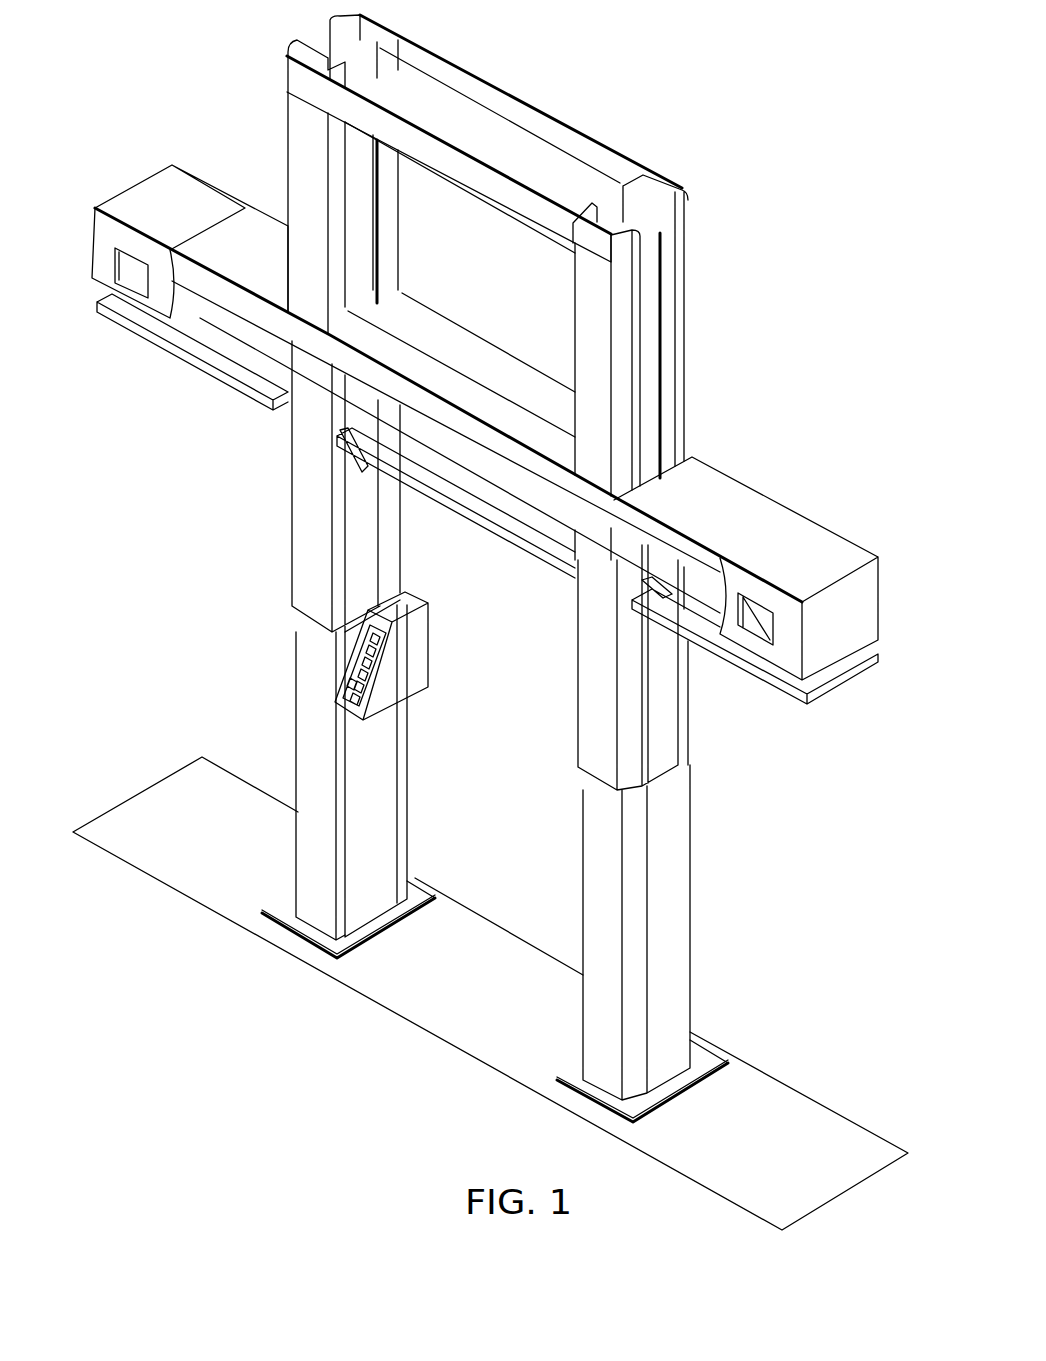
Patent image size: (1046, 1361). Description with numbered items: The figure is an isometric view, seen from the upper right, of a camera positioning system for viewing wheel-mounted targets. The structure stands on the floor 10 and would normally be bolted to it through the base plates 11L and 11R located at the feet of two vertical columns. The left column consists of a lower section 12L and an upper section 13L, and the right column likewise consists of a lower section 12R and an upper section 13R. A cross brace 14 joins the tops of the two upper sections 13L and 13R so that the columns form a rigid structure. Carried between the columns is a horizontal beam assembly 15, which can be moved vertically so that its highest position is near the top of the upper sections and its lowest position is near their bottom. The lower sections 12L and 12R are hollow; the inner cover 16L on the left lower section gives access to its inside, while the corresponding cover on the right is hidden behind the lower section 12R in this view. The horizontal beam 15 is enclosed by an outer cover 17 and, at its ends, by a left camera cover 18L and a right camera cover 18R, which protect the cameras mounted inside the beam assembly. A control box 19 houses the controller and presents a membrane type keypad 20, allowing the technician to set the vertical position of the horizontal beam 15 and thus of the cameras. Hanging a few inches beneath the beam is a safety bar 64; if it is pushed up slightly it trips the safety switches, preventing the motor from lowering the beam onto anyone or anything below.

The floor 10 is at (212, 870).
The left base plate 11L is at (340, 950).
The right base plate 11R is at (630, 1118).
The lower section of left column 12L is at (298, 728).
The lower section of right column 12R is at (585, 955).
The upper section of left column 13L is at (318, 585).
The upper section of right column 13R is at (605, 765).
The cross brace 14 is at (430, 68).
The horizontal beam assembly 15 is at (530, 363).
The inner cover 16L is at (363, 858).
The outer cover 17 is at (495, 470).
The left camera cover 18L is at (143, 212).
The right camera cover 18R is at (847, 640).
The control box 19 is at (415, 645).
The membrane type keypad 20 is at (375, 705).
The safety bar 64 is at (208, 372).